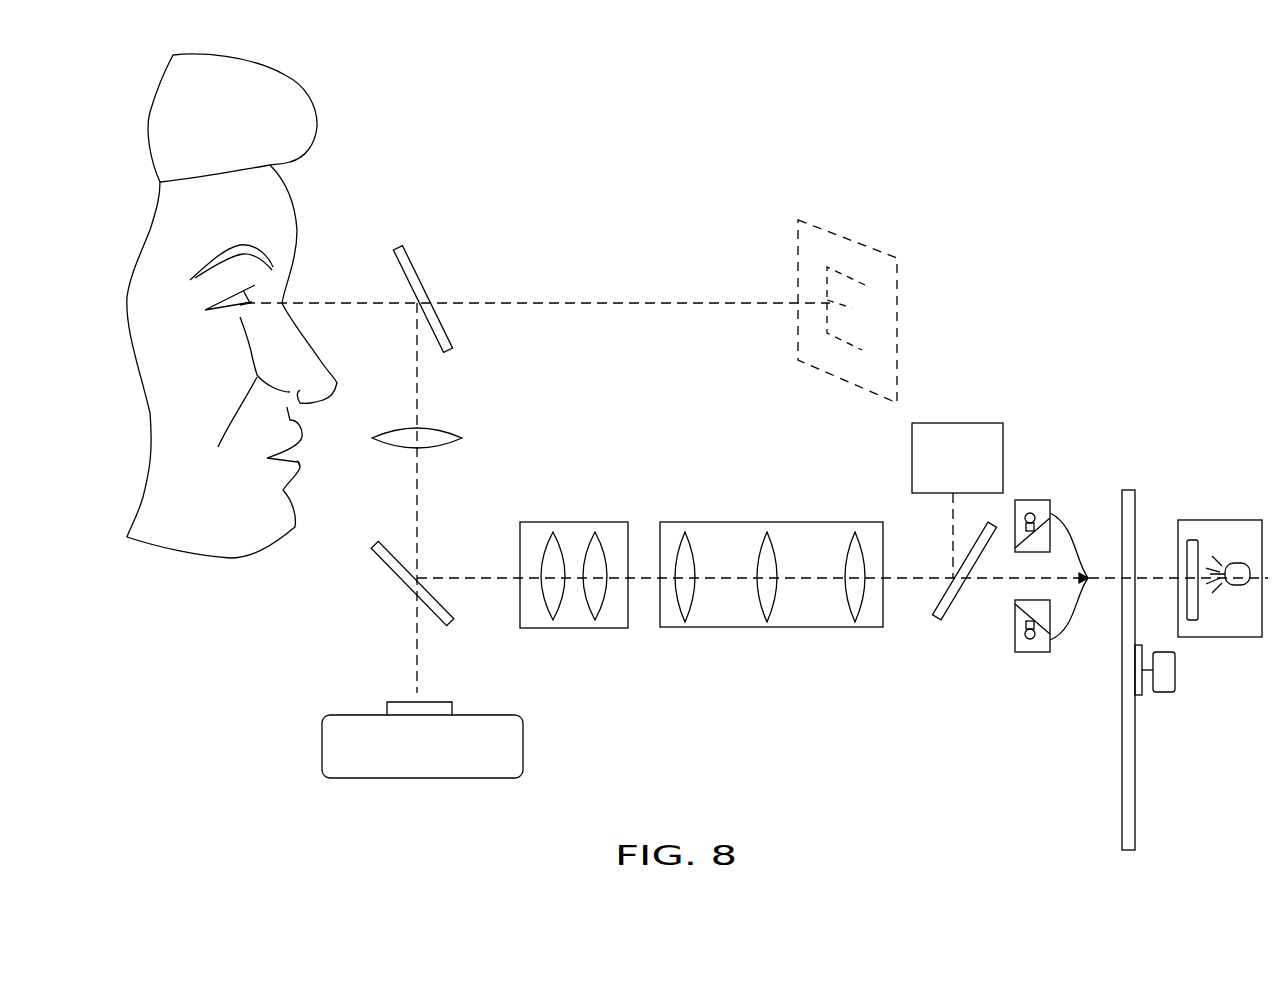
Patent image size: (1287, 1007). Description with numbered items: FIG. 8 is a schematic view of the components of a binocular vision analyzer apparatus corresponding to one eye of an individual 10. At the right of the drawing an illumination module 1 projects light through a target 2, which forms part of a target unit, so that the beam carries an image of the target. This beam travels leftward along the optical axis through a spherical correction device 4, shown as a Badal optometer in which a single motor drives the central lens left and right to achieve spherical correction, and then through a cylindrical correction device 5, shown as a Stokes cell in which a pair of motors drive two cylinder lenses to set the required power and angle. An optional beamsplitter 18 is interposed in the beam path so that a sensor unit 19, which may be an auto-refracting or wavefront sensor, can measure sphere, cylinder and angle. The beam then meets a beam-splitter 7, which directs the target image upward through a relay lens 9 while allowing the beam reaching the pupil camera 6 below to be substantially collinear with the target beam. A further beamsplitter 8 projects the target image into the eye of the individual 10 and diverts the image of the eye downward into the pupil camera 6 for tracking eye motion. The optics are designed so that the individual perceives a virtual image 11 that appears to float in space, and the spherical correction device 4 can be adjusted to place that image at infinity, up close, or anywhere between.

The illumination module 1 is at (1220, 520).
The target 2 is at (1122, 772).
The spherical correction device 4 is at (800, 627).
The cylindrical correction device 5 is at (608, 630).
The pupil camera 6 is at (358, 715).
The beam-splitter 7 is at (428, 590).
The beamsplitter 8 is at (427, 290).
The relay lens 9 is at (445, 428).
The individual 10 is at (345, 160).
The virtual image 11 is at (865, 250).
The beamsplitter 18 is at (963, 587).
The sensor unit 19 is at (967, 423).